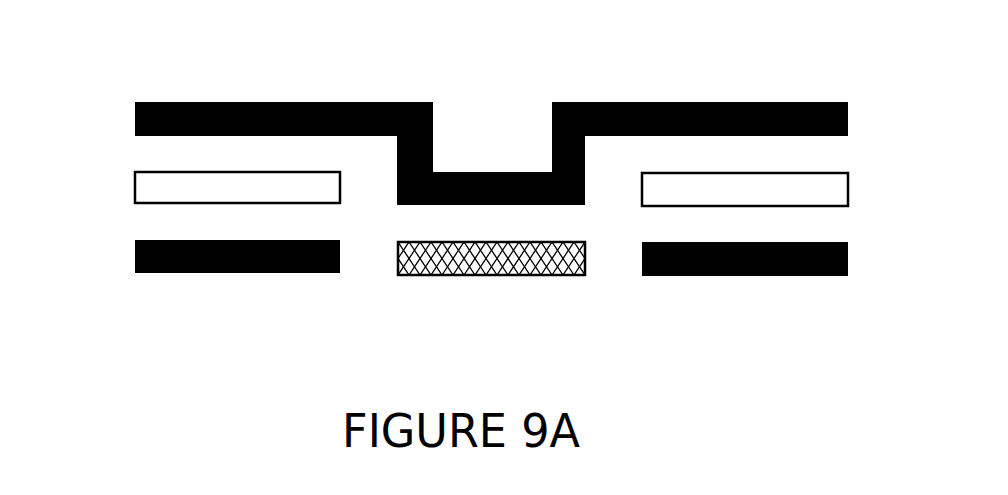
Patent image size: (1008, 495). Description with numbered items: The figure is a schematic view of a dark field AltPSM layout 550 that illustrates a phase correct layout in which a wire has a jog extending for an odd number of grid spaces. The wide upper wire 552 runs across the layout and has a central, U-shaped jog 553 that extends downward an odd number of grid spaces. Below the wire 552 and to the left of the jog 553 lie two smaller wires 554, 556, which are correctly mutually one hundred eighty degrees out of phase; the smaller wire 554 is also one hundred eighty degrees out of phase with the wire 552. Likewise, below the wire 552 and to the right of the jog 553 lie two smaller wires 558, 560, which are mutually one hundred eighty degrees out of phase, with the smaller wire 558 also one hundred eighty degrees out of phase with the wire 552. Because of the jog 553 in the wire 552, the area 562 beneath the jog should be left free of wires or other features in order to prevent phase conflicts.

The dark field AltPSM layout 550 is at (812, 71).
The wire 552 is at (168, 101).
The U-shaped jog 553 is at (480, 172).
The smaller wire 554 is at (160, 179).
The smaller wire 556 is at (135, 255).
The smaller wire 558 is at (670, 185).
The smaller wire 560 is at (672, 276).
The area 562 is at (482, 275).